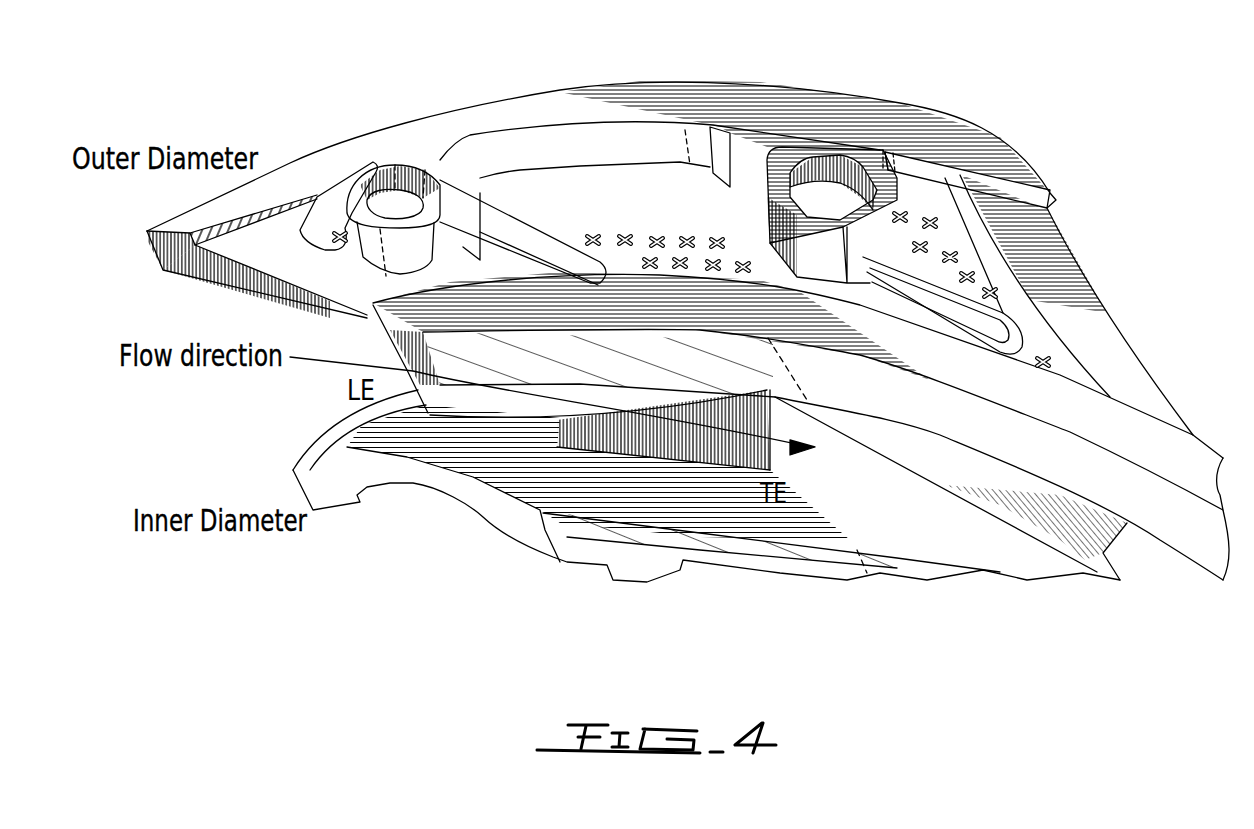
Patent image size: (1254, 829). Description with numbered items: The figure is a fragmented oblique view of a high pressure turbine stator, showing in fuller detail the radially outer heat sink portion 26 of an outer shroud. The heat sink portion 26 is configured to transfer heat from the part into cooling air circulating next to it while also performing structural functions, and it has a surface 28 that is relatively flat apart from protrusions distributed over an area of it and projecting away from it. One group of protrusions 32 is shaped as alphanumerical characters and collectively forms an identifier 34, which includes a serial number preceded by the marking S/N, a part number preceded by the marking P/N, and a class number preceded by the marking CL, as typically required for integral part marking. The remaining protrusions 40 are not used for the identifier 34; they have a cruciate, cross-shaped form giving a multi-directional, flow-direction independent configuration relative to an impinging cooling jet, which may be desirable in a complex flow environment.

The heat sink portion 26 is at (727, 200).
The surface 28 is at (752, 197).
The protrusions 32 is at (540, 198).
The identifier 34 is at (645, 187).
The protrusions 40 is at (716, 268).